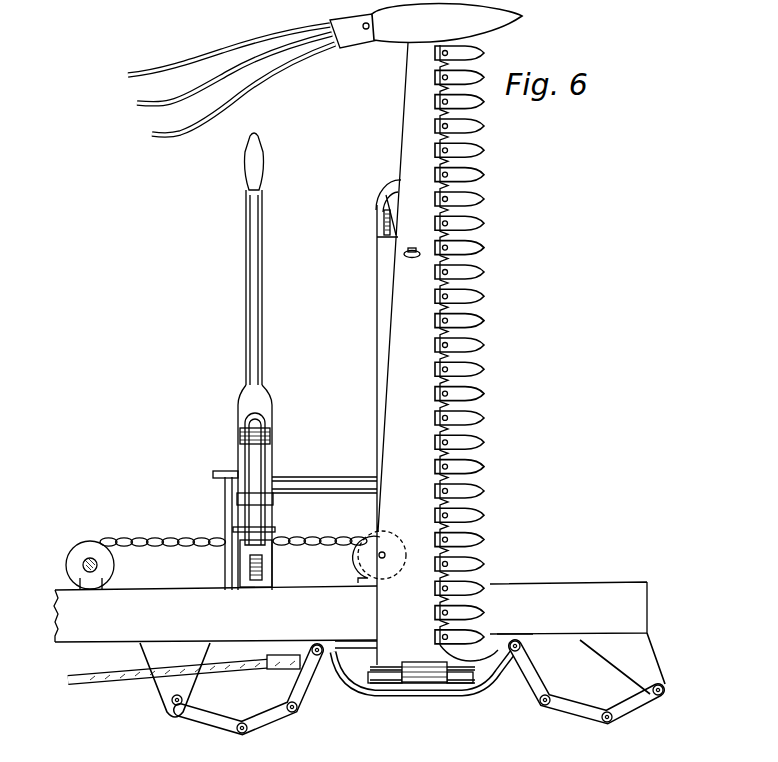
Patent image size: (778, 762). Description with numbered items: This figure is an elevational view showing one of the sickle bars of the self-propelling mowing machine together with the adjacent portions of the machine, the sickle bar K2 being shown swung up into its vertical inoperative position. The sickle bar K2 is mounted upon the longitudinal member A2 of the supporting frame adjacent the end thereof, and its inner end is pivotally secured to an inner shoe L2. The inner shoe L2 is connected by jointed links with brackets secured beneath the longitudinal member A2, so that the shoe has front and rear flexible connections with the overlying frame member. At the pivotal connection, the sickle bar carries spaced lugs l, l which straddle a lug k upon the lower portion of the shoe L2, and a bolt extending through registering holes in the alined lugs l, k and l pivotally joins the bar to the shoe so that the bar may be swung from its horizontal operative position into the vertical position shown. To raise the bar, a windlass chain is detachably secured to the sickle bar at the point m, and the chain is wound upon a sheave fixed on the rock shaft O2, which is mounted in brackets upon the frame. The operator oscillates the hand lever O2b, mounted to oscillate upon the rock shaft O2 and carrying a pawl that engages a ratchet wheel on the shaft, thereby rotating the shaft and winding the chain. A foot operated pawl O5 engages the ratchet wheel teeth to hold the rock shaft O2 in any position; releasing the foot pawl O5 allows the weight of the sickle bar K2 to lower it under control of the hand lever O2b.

The longitudinal member of the supporting frame A2 is at (592, 590).
The sickle bar K2 is at (400, 384).
The rock shaft O2 is at (248, 358).
The hand lever O2b is at (290, 486).
The foot operated pawl O5 is at (255, 517).
The chain attachment point m is at (406, 252).
The lug k is at (425, 674).
The lug l is at (383, 677).
The inner shoe L2 is at (466, 690).